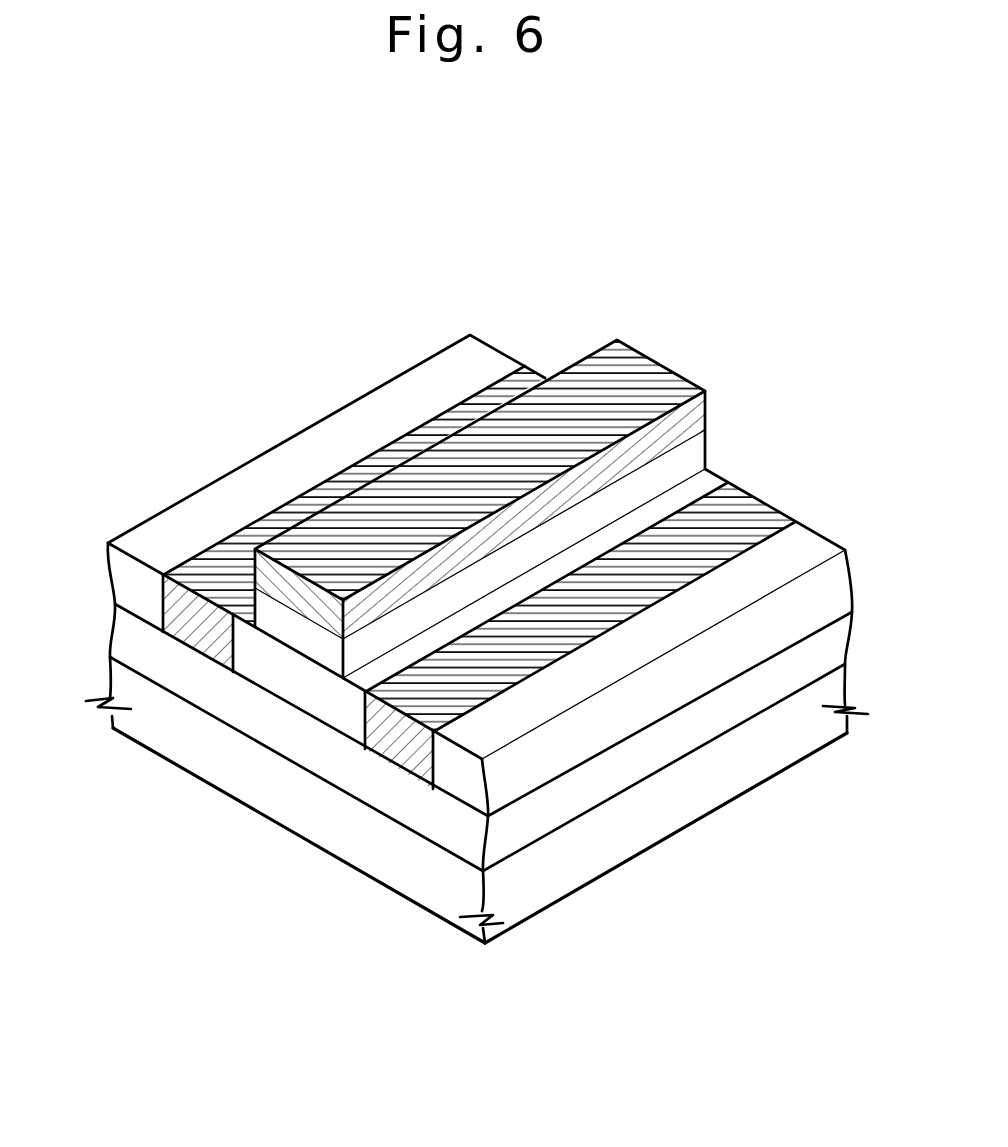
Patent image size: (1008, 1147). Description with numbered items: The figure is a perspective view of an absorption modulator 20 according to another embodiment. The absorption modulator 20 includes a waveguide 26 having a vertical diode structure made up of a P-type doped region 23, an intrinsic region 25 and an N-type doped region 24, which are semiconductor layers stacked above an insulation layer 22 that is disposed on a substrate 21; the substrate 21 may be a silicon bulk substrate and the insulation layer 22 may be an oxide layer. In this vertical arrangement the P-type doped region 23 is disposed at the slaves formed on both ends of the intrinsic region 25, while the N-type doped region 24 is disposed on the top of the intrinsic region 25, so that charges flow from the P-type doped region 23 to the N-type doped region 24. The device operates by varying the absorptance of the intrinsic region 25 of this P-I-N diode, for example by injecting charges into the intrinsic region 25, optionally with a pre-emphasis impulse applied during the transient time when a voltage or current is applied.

The absorption modulator 20 is at (782, 238).
The substrate 21 is at (450, 886).
The insulation layer 22 is at (432, 824).
The P-type doped region 23 is at (225, 630).
The N-type doped region 24 is at (307, 613).
The intrinsic region 25 is at (333, 703).
The waveguide 26 is at (185, 845).